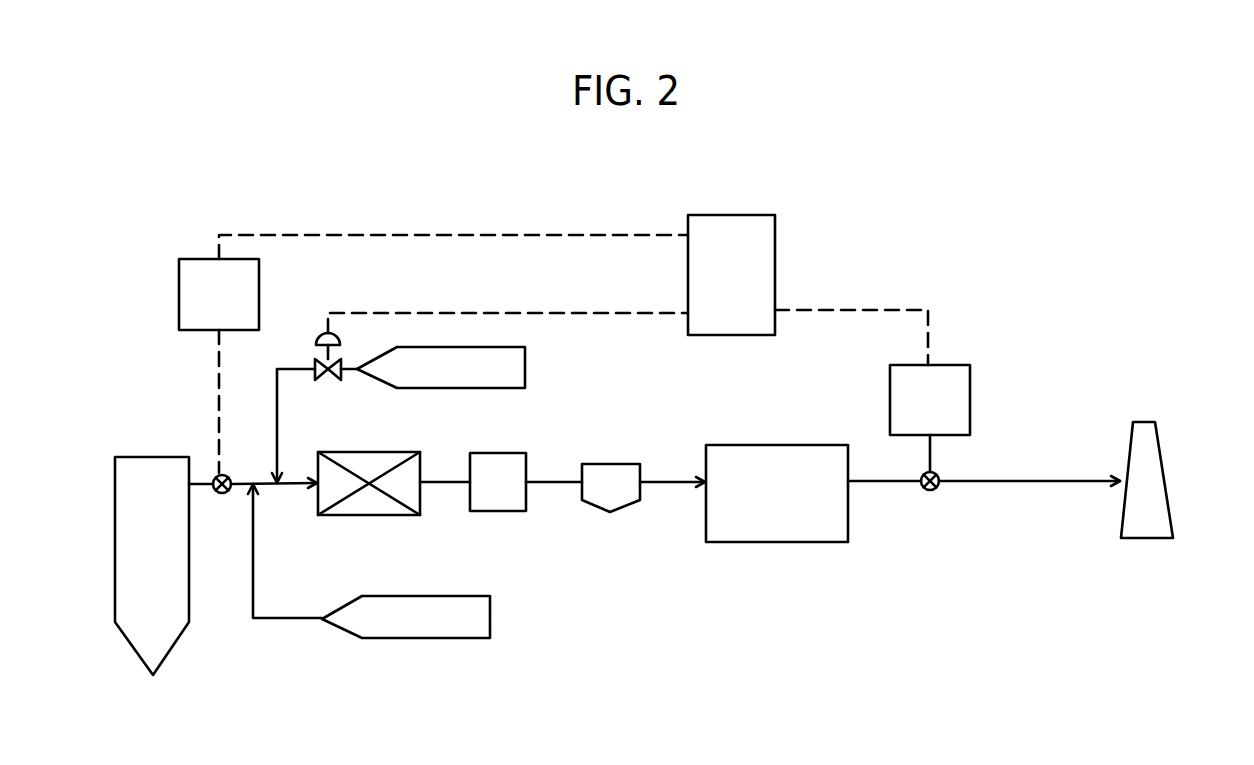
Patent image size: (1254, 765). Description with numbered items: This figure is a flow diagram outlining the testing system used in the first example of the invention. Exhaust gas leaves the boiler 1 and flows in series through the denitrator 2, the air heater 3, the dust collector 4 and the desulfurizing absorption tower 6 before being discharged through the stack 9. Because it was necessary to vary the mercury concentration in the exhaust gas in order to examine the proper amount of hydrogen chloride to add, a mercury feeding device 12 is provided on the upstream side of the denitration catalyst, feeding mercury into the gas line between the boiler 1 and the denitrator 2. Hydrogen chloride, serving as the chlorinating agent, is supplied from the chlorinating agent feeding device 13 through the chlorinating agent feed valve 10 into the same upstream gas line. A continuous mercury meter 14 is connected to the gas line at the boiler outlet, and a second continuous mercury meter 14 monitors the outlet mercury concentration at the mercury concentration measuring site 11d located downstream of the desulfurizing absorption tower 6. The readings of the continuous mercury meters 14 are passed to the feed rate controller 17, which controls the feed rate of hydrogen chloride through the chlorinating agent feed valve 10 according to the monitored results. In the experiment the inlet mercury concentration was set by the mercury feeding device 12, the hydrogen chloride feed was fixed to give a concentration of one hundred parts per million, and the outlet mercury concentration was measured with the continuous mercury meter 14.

The boiler 1 is at (158, 457).
The denitrator 2 is at (335, 515).
The air heater 3 is at (512, 511).
The dust collector 4 is at (598, 512).
The desulfurizing absorption tower 6 is at (771, 542).
The stack 9 is at (1145, 538).
The chlorinating agent feed valve 10 is at (332, 380).
The mercury concentration measuring site 11d is at (930, 490).
The mercury feeding device 12 is at (383, 638).
The chlorinating agent feeding device 13 is at (406, 347).
The continuous mercury meter 14 is at (259, 285).
The feed rate controller 17 is at (775, 235).